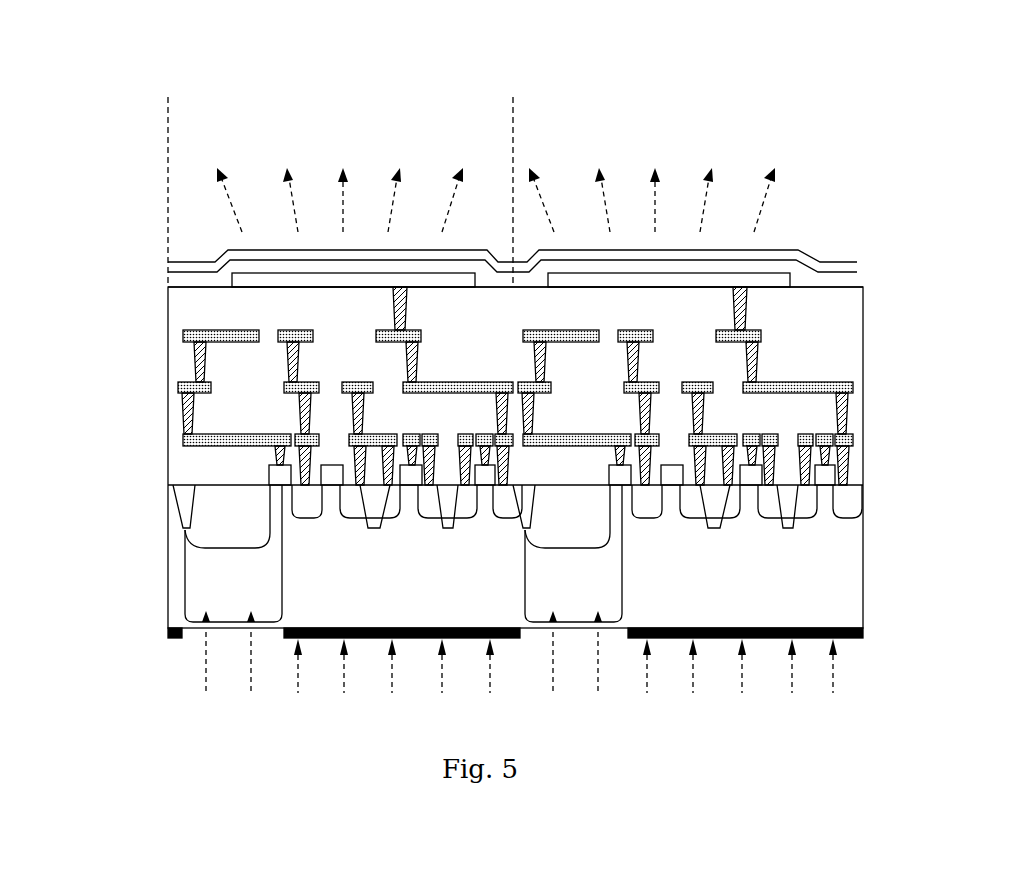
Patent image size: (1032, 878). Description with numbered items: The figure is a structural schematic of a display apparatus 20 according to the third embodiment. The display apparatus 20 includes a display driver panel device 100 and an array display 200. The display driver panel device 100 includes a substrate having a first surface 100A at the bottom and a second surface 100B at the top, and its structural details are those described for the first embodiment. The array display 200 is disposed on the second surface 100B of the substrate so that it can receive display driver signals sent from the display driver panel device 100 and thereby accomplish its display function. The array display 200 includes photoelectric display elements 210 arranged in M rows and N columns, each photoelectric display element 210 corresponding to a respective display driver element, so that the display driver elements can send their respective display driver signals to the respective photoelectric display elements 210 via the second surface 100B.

The display apparatus 20 is at (80, 50).
The photoelectric display element 210 is at (505, 130).
The array display 200 is at (157, 243).
The display driver panel device 100 is at (157, 290).
The second surface 100B is at (835, 278).
The first surface 100A is at (847, 639).